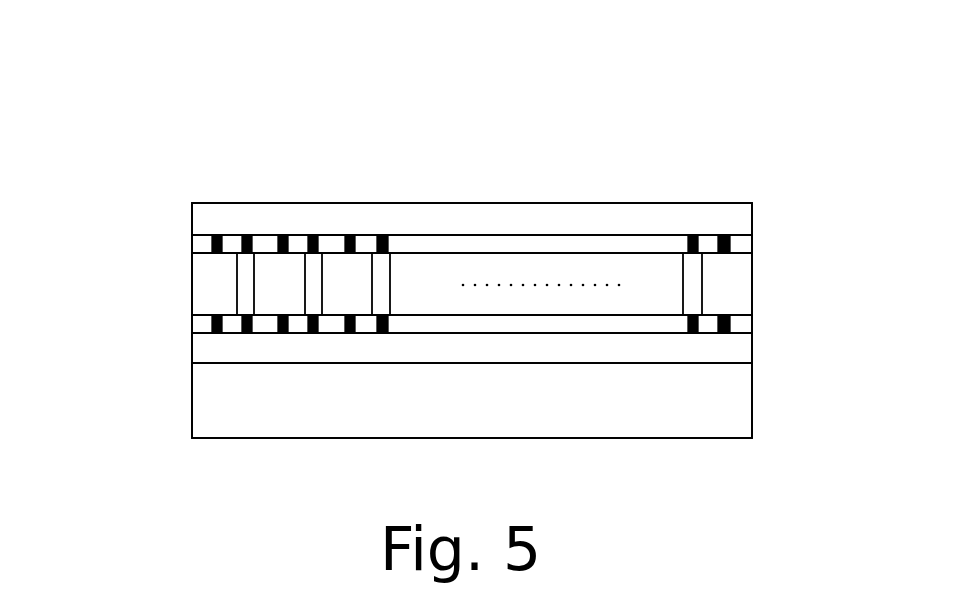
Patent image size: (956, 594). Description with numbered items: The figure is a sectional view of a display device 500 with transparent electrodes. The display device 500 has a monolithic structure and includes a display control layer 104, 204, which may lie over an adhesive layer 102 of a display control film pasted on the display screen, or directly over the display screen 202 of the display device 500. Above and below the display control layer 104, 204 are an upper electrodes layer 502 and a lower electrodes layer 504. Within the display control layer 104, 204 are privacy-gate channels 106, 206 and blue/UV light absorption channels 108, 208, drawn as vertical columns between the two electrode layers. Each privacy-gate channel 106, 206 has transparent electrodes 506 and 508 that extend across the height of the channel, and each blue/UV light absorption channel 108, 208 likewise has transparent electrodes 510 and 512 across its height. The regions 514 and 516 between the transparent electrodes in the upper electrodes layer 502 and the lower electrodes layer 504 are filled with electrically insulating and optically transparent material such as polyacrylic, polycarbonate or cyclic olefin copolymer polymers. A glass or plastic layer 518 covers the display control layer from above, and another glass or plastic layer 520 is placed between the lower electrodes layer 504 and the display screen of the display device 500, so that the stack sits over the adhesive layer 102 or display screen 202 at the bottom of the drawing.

The display device 500 is at (562, 77).
The glass or plastic layer 518 is at (585, 203).
The upper electrodes layer 502 is at (753, 242).
The transparent electrode 510 is at (215, 238).
The transparent electrode 506 is at (245, 238).
The region 514 is at (335, 243).
The display control layer 104 is at (557, 279).
The display control layer 204 is at (774, 268).
The privacy-gate channel 106 is at (385, 269).
The privacy-gate channel 206 is at (245, 287).
The blue/UV light absorption channel 108 is at (321, 284).
The blue/UV light absorption channel 208 is at (215, 293).
The lower electrodes layer 504 is at (752, 322).
The transparent electrode 512 is at (213, 334).
The transparent electrode 508 is at (242, 335).
The region 516 is at (367, 326).
The glass or plastic layer 520 is at (730, 364).
The adhesive layer 102 is at (472, 400).
The display screen 202 is at (518, 412).